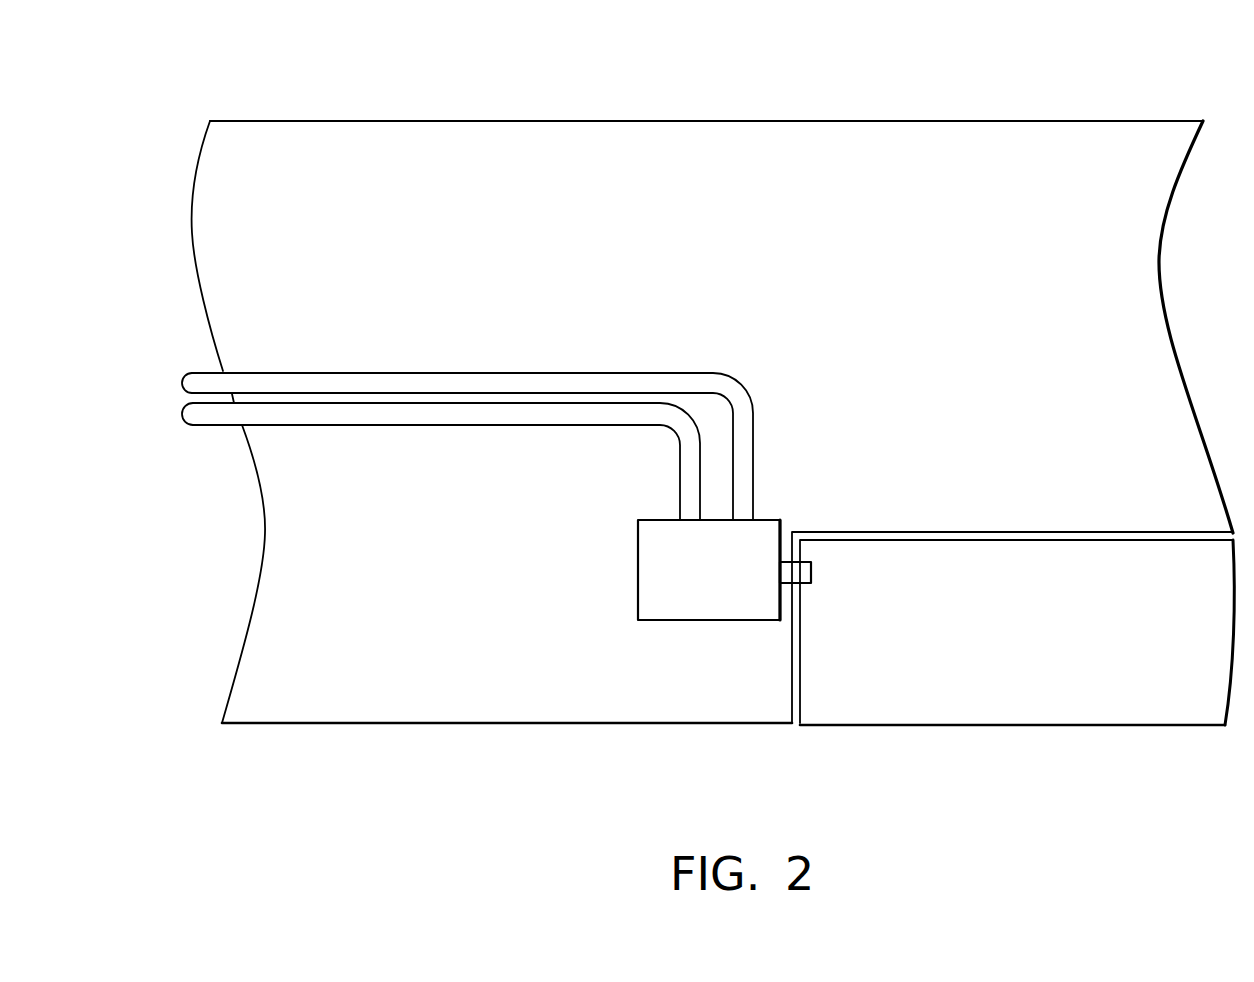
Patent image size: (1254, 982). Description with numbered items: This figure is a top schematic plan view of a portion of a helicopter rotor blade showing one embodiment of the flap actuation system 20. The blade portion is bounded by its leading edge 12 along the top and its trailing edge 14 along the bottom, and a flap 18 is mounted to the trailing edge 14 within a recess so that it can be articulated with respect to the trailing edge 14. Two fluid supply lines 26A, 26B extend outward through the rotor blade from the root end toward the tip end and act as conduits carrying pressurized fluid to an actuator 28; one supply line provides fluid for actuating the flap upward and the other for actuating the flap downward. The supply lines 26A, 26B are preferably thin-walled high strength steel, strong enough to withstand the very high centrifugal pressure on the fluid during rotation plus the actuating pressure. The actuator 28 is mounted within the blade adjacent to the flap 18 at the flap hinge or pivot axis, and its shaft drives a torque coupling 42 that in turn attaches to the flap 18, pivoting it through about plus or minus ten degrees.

The leading edge 12 is at (770, 172).
The trailing edge 14 is at (357, 680).
The flap 18 is at (1065, 678).
The actuation system 20 is at (482, 681).
The fluid supply line 26A is at (395, 382).
The fluid supply line 26B is at (435, 413).
The actuator 28 is at (768, 545).
The torque coupling 42 is at (802, 572).